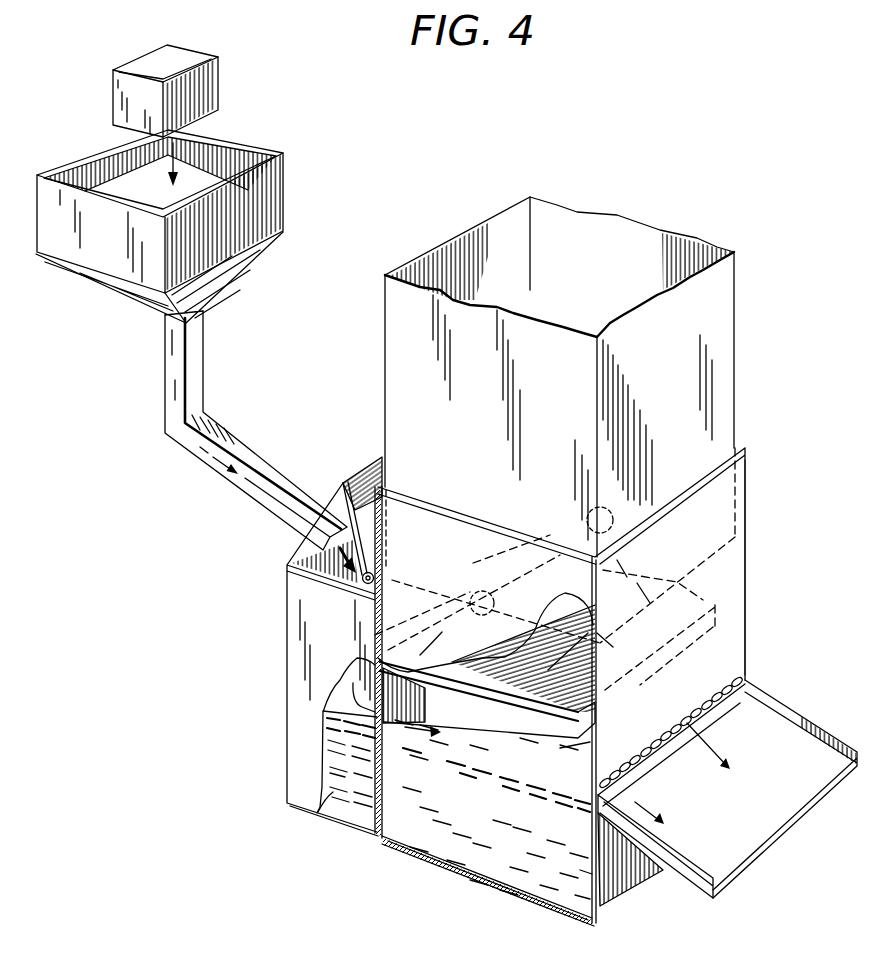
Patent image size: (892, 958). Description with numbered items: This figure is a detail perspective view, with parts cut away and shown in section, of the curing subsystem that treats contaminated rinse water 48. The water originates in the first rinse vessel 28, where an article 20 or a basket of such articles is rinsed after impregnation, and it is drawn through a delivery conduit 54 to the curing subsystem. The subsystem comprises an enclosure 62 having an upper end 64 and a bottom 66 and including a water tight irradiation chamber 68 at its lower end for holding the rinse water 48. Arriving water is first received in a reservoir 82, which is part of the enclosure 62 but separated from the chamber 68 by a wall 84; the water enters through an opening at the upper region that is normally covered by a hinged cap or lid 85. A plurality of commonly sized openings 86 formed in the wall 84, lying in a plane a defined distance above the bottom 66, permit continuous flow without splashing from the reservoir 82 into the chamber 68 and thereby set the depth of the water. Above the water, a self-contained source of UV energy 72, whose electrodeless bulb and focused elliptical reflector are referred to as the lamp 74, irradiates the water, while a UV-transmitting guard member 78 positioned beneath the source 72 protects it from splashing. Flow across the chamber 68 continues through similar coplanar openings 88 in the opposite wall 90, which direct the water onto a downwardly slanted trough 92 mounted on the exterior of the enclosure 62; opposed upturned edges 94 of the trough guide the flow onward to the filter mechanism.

The article 20 is at (203, 78).
The first rinse vessel 28 is at (265, 191).
The delivery conduit 54 is at (262, 450).
The cap or lid 85 is at (362, 478).
The upper end 64 is at (423, 523).
The lamp 74 is at (560, 513).
The source of UV energy 72 is at (720, 327).
The enclosure 62 is at (768, 525).
The reservoir 82 is at (287, 640).
The wall 90 is at (730, 647).
The wall 84 is at (322, 752).
The openings 86 is at (405, 700).
The irradiation chamber 68 is at (565, 750).
The guard member 78 is at (583, 742).
The openings 88 is at (742, 702).
The contaminated rinse water 48 is at (390, 835).
The bottom 66 is at (463, 872).
The trough 92 is at (755, 843).
The upturned edges 94 is at (697, 880).